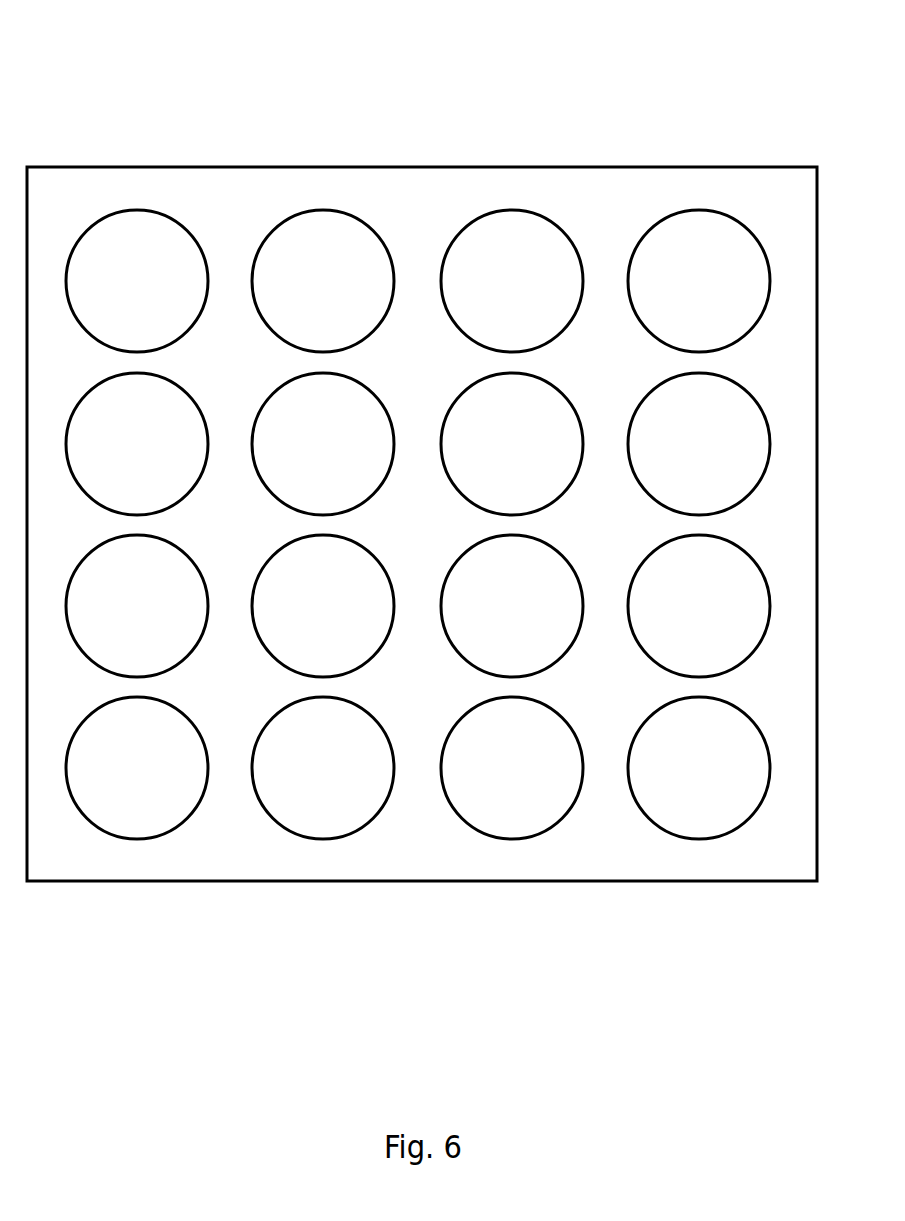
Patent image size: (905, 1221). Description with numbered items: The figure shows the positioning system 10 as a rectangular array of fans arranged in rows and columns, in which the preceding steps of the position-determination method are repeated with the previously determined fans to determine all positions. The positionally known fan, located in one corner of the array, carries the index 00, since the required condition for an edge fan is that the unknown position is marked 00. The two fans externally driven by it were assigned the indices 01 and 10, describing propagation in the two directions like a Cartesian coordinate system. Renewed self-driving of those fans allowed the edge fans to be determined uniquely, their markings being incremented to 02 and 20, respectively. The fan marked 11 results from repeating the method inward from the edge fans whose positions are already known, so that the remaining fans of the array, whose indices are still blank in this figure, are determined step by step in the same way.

The array of optical elements 10 is at (422, 474).
The optical element at position (0,0) 00 is at (137, 768).
The optical element at position (0,1) 01 is at (137, 606).
The optical element at position (0,2) 02 is at (137, 444).
The optical element at position (1,1) 11 is at (323, 606).
The optical element at position (2,0) 20 is at (512, 768).